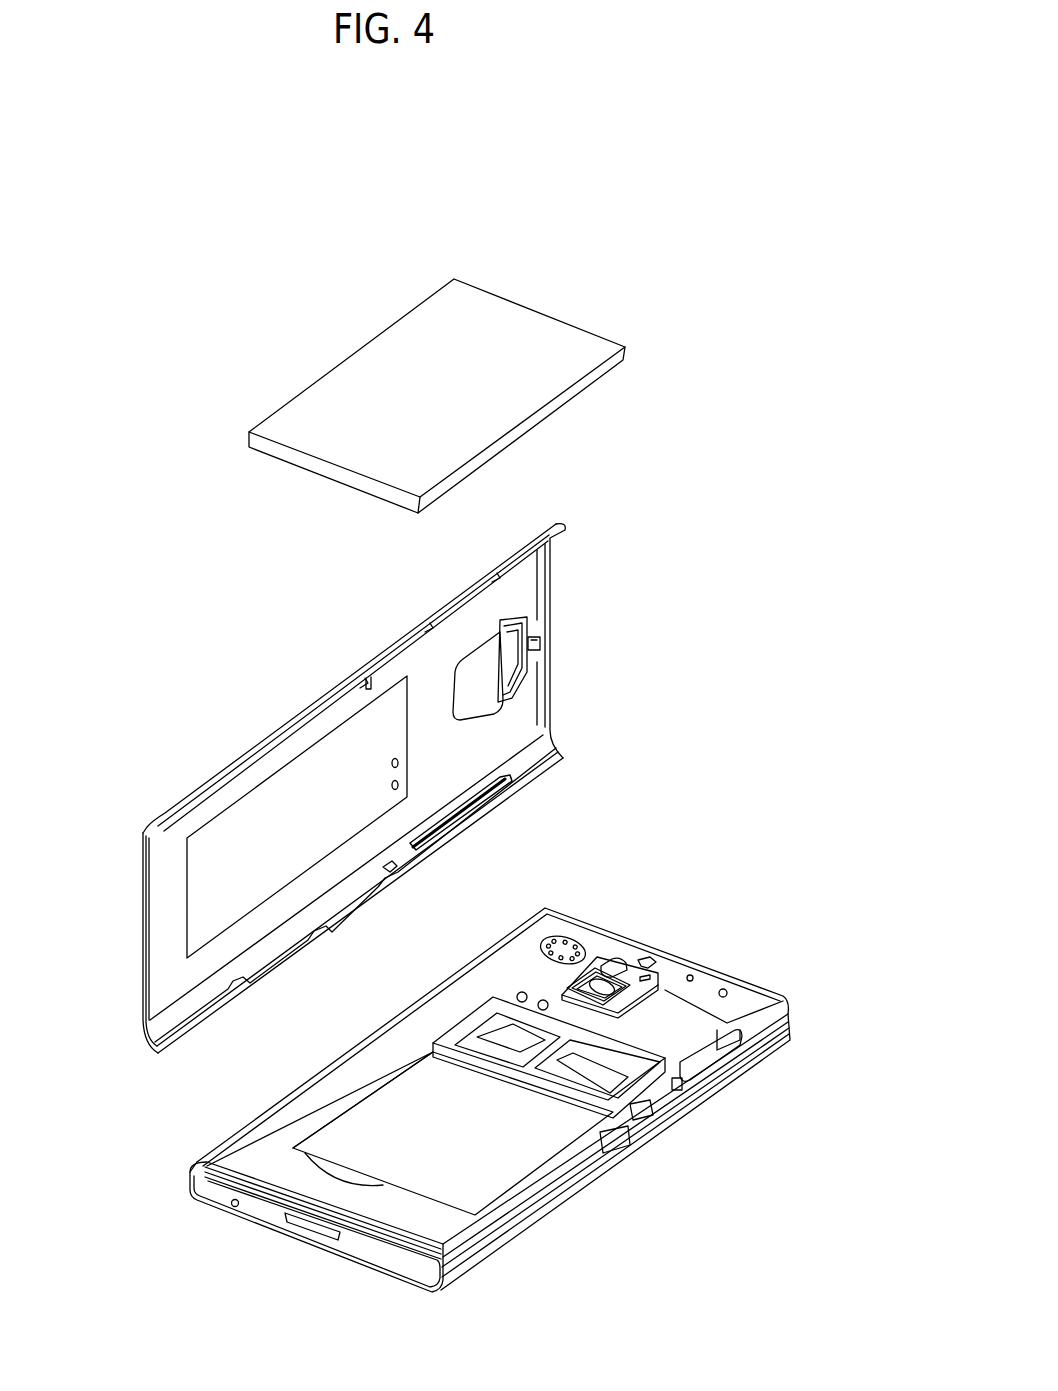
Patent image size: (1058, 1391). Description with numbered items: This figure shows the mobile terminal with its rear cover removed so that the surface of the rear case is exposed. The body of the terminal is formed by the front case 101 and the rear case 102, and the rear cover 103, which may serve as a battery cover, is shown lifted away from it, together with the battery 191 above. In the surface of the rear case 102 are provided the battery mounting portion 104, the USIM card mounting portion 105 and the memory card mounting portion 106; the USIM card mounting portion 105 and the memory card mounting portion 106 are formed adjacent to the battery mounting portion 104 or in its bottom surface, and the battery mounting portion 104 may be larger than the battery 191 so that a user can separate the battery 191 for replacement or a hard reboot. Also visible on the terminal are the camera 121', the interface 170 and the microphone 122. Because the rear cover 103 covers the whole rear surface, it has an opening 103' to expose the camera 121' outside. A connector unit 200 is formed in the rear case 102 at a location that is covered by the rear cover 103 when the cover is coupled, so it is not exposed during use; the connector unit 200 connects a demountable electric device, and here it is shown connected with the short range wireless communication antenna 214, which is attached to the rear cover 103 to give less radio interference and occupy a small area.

The battery 191 is at (533, 355).
The rear cover 103 is at (386, 788).
The opening 103' is at (544, 668).
The short range communication antenna 214 is at (225, 857).
The connector unit 200 is at (517, 987).
The memory card mounting portion 106 is at (488, 1030).
The USIM card mounting portion 105 is at (607, 1077).
The battery mounting portion 104 is at (370, 1120).
The camera 121' is at (606, 946).
The rear case 102 is at (262, 1152).
The microphone 122 is at (237, 1207).
The interface 170 is at (310, 1223).
The front case 101 is at (475, 1265).